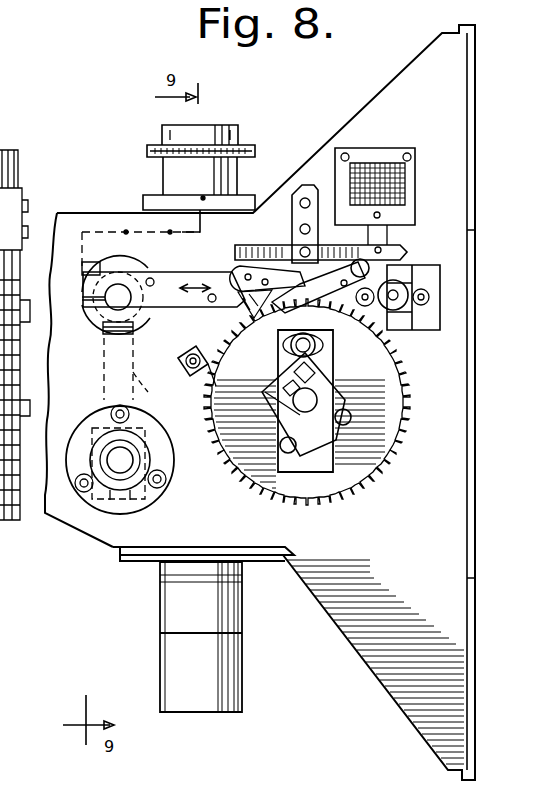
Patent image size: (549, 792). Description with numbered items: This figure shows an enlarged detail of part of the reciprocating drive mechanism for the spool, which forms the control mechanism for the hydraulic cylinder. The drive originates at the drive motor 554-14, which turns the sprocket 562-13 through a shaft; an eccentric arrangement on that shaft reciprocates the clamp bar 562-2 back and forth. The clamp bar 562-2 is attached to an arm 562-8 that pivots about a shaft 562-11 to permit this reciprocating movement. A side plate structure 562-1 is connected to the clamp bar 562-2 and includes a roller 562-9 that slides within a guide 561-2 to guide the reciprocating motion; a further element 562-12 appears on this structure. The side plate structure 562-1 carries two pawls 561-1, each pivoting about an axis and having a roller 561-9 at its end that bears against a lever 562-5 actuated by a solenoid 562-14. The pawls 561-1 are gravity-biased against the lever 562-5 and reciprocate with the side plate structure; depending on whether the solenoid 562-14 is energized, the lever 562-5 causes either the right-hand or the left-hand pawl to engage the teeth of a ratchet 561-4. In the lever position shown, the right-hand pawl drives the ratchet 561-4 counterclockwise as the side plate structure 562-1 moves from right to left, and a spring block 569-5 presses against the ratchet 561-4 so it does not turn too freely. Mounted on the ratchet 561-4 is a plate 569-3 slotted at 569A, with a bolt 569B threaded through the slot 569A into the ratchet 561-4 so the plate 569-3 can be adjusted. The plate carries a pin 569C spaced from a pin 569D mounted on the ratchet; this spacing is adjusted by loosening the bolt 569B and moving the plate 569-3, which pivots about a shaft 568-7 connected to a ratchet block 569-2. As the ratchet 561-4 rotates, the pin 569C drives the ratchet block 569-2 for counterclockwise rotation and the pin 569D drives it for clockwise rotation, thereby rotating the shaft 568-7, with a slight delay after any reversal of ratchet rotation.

The clamp bar 562-2 is at (33, 250).
The sprocket 562-13 is at (215, 152).
The pawls 561-1 is at (279, 285).
The solenoid 562-14 is at (432, 136).
The roller 561-9 is at (286, 205).
The side plate structure 562-1 is at (163, 281).
The lever 562-5 is at (398, 256).
The roller 562-12 is at (118, 299).
The spring block 569-5 is at (207, 354).
The slot 569A is at (320, 350).
The bolt 569B is at (283, 344).
The guide 561-2 is at (428, 322).
The roller 562-9 is at (393, 308).
The arm 562-8 is at (161, 393).
The pin 569D is at (352, 420).
The ratchet 561-4 is at (415, 468).
The shaft 568-7 is at (335, 442).
The pin 569C is at (283, 450).
The shaft 562-11 is at (122, 465).
The ratchet block 569-2 is at (318, 470).
The plate 569-3 is at (312, 476).
The drive motor 554-14 is at (228, 683).